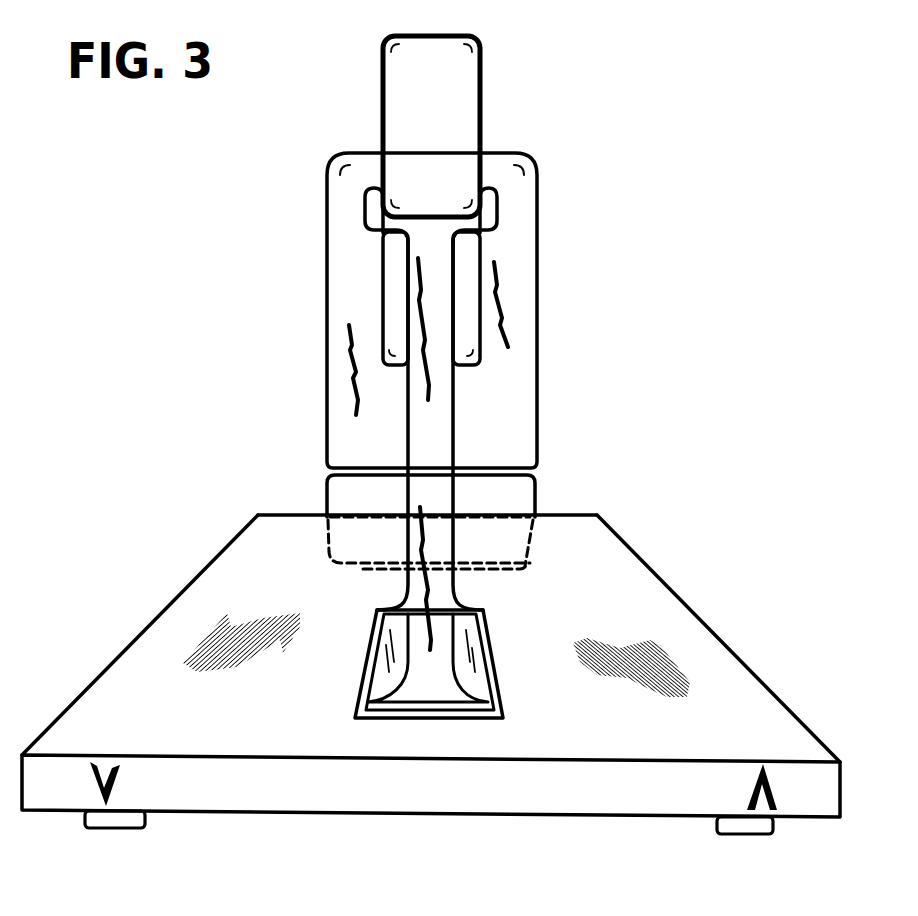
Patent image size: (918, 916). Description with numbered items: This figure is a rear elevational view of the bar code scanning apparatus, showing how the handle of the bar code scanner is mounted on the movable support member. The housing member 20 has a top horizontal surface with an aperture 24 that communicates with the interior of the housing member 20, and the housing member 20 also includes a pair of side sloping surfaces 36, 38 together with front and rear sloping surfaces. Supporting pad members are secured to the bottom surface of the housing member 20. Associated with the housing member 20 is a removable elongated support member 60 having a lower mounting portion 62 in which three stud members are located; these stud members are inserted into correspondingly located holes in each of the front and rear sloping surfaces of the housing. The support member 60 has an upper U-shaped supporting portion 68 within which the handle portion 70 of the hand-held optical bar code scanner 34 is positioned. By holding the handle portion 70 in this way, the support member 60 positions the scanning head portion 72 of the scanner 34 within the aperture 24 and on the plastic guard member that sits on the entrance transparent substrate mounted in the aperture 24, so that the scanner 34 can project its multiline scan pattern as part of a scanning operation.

The housing member 20 is at (806, 818).
The aperture 24 is at (540, 527).
The hand-held optical bar code scanner 34 is at (530, 166).
The side sloping surface 36 is at (114, 656).
The side sloping surface 38 is at (664, 580).
The removable elongated support member 60 is at (455, 432).
The lower mounting portion 62 is at (492, 678).
The upper U-shaped supporting portion 68 is at (497, 220).
The handle portion 70 is at (481, 72).
The scanning head portion 72 is at (537, 440).